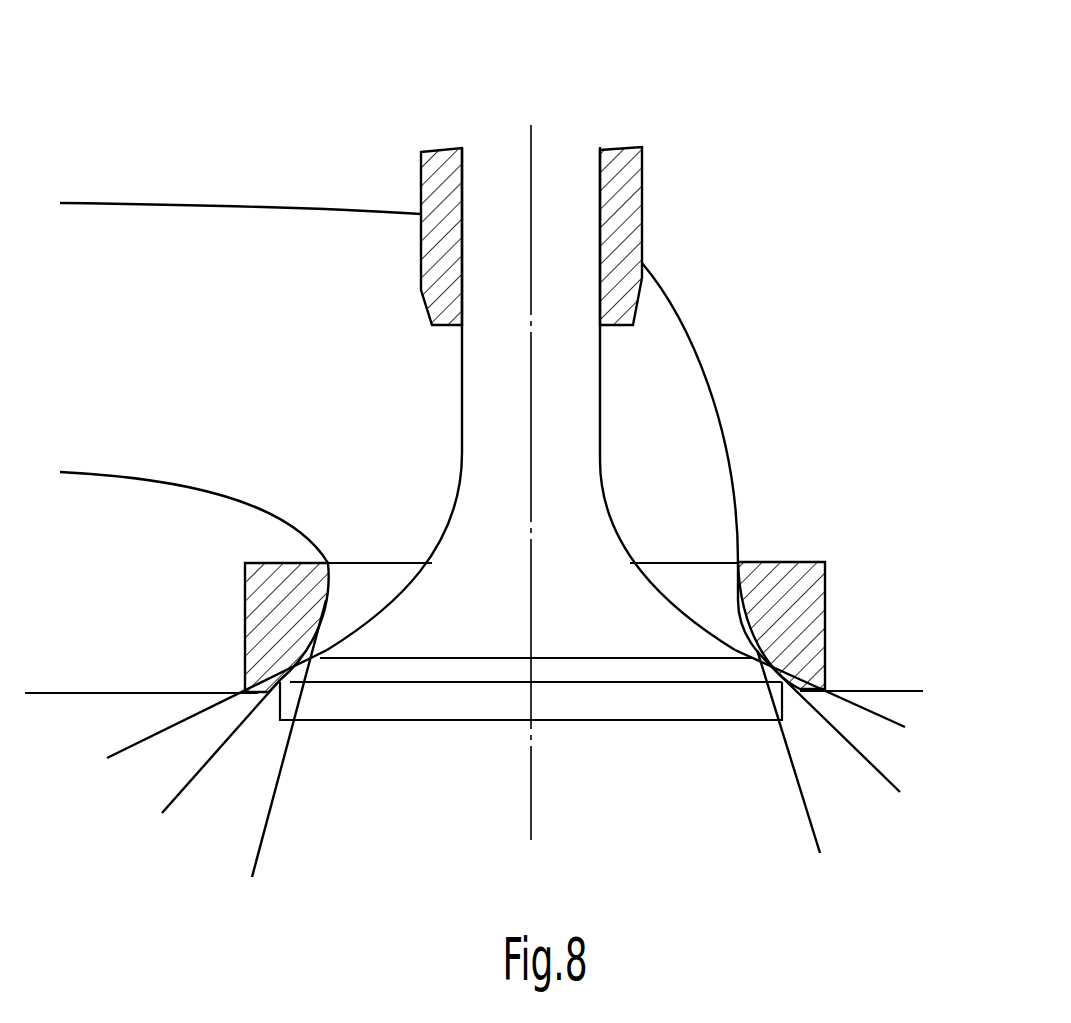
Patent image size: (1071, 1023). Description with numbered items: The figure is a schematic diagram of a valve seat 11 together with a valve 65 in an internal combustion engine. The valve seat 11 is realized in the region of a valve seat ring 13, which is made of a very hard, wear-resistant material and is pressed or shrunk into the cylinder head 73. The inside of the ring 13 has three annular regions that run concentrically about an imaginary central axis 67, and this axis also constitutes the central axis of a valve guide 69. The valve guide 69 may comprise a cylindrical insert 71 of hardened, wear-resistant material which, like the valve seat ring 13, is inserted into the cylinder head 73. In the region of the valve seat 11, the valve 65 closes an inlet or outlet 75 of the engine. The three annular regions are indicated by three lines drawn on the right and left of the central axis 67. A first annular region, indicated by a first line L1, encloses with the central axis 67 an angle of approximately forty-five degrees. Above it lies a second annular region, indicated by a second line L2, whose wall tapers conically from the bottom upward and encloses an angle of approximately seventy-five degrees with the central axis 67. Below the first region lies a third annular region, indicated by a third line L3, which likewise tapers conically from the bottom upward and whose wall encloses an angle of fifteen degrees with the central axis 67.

The valve seat 11 is at (244, 686).
The valve seat ring 13 is at (826, 588).
The valve 65 is at (568, 425).
The central axis 67 is at (538, 804).
The valve guide 69 is at (643, 189).
The cylindrical insert 71 is at (615, 148).
The cylinder head 73 is at (73, 697).
The inlet or outlet 75 is at (125, 365).
The first line L1 is at (180, 790).
The second line L2 is at (262, 840).
The third line L3 is at (137, 742).